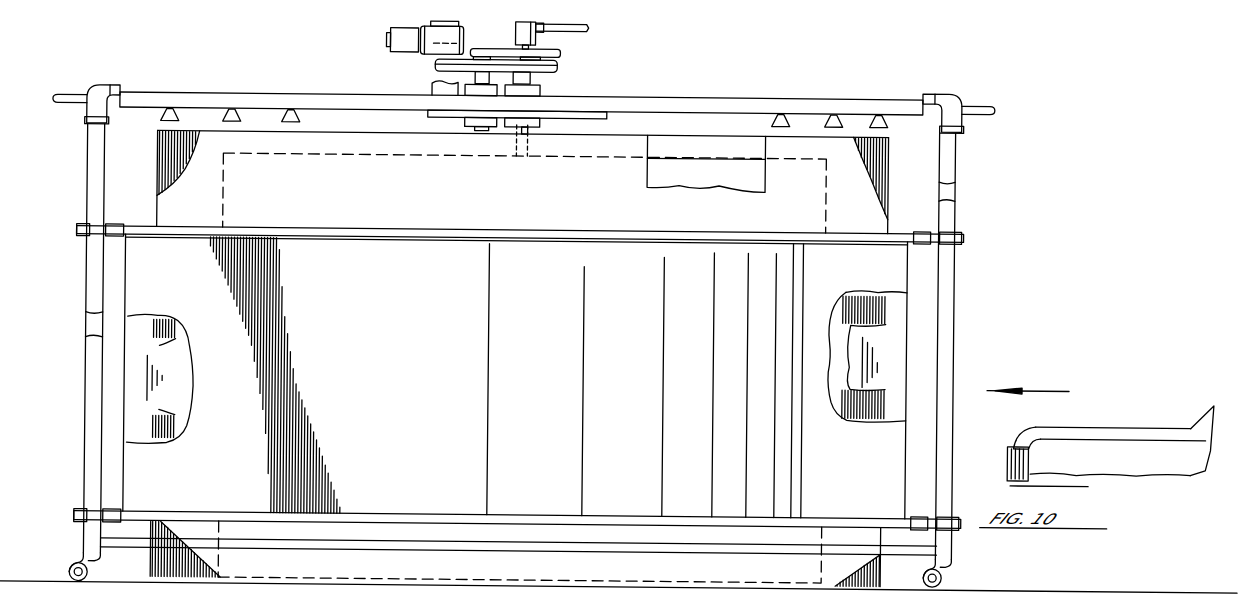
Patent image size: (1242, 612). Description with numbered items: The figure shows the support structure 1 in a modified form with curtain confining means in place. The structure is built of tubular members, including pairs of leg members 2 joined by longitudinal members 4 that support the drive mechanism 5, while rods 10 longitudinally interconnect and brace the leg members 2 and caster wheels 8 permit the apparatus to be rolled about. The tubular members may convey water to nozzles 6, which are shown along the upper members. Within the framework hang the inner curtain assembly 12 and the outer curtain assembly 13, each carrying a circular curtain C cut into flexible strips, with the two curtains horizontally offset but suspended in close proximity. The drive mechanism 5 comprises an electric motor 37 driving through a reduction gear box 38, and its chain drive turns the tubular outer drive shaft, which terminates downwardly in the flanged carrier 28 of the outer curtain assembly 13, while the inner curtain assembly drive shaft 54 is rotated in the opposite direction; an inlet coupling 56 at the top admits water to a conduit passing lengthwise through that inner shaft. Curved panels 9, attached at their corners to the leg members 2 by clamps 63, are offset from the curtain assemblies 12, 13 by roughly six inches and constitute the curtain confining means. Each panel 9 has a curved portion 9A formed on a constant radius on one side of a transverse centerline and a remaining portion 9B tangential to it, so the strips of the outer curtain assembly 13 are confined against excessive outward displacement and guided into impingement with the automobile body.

The support structure 1 is at (660, 75).
The leg members 2 is at (88, 330).
The longitudinal members 4 is at (687, 99).
The drive mechanism 5 is at (420, 66).
The nozzles 6 is at (178, 117).
The caster wheels 8 is at (67, 571).
The curved panels 9 is at (525, 358).
The curved portion 9A is at (147, 370).
The remaining portion 9B is at (292, 362).
The rods 10 is at (497, 554).
The inner curtain assembly 12 is at (677, 148).
The outer curtain assembly 13 is at (352, 128).
The flanged carrier 28 is at (516, 127).
The electric motor 37 is at (402, 40).
The reduction gear box 38 is at (463, 37).
The inner curtain assembly drive shaft 54 is at (533, 149).
The inlet coupling 56 is at (536, 28).
The clamps 63 is at (90, 236).
The circular curtains C is at (224, 192).